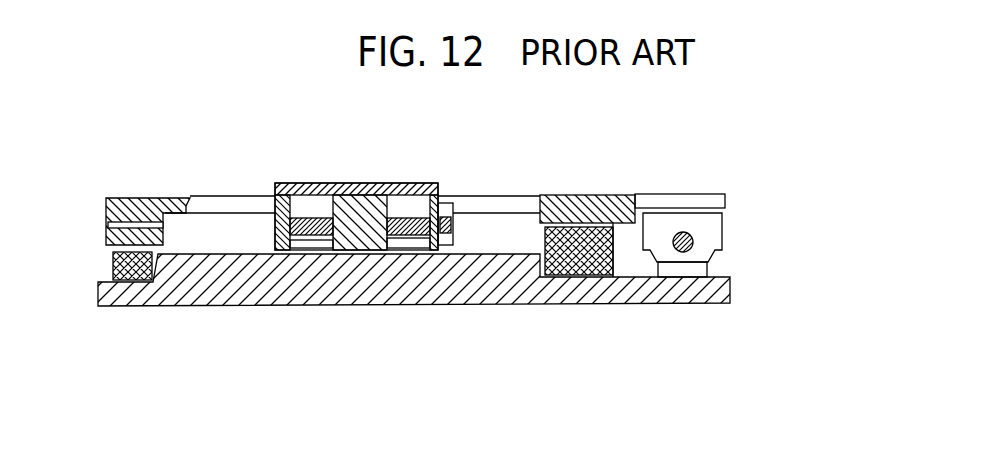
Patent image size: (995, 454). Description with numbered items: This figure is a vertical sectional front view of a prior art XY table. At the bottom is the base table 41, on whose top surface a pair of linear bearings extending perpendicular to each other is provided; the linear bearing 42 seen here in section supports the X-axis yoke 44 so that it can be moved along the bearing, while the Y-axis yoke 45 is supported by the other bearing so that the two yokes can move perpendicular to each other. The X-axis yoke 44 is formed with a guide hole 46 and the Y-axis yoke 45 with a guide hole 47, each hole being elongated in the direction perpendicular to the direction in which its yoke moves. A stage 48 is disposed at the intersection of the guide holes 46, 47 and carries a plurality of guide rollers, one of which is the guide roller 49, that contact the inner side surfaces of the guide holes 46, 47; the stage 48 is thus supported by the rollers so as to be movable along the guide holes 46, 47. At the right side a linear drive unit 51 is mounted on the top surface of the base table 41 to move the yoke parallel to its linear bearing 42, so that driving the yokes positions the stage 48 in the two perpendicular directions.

The base table 41 is at (248, 305).
The linear bearing 42 is at (138, 278).
The X-axis yoke 44 is at (140, 198).
The Y-axis yoke 45 is at (398, 230).
The guide hole 46 is at (203, 197).
The guide hole 47 is at (313, 185).
The stage 48 is at (393, 183).
The guide roller 49 is at (355, 182).
The linear drive unit 51 is at (720, 235).